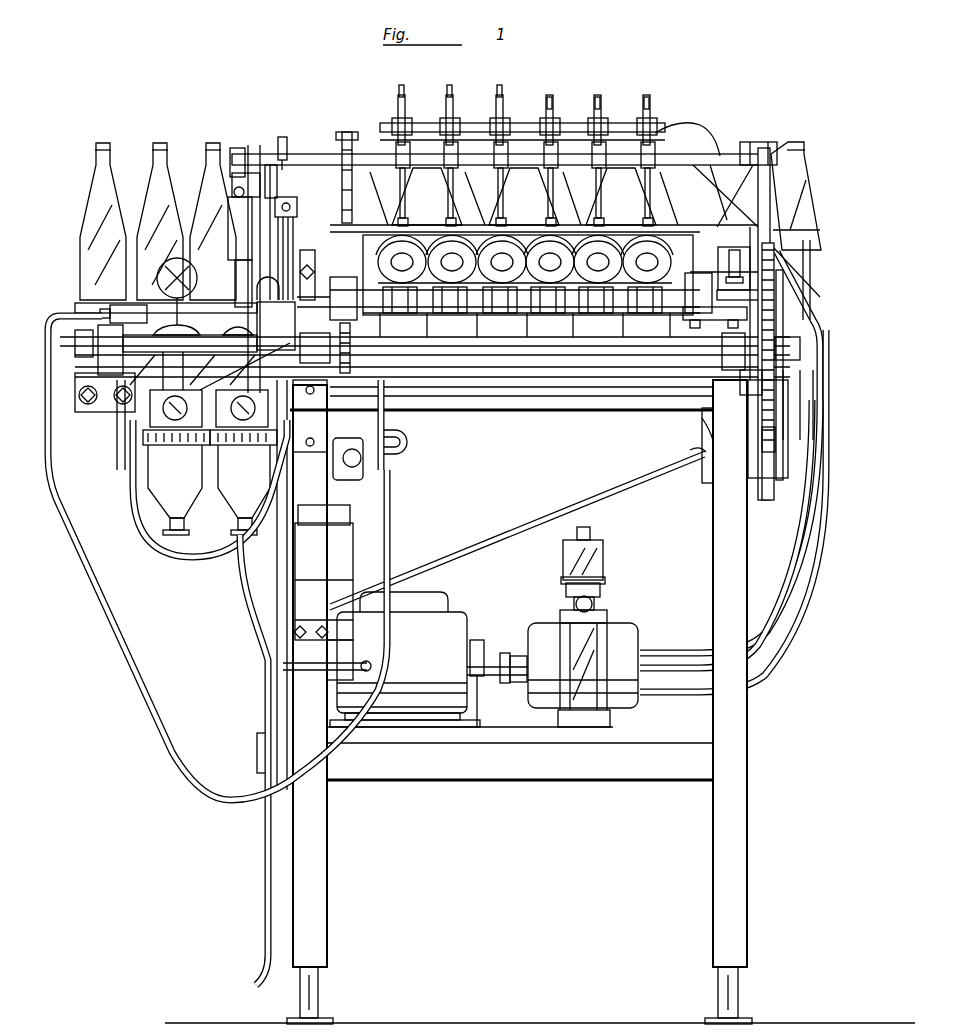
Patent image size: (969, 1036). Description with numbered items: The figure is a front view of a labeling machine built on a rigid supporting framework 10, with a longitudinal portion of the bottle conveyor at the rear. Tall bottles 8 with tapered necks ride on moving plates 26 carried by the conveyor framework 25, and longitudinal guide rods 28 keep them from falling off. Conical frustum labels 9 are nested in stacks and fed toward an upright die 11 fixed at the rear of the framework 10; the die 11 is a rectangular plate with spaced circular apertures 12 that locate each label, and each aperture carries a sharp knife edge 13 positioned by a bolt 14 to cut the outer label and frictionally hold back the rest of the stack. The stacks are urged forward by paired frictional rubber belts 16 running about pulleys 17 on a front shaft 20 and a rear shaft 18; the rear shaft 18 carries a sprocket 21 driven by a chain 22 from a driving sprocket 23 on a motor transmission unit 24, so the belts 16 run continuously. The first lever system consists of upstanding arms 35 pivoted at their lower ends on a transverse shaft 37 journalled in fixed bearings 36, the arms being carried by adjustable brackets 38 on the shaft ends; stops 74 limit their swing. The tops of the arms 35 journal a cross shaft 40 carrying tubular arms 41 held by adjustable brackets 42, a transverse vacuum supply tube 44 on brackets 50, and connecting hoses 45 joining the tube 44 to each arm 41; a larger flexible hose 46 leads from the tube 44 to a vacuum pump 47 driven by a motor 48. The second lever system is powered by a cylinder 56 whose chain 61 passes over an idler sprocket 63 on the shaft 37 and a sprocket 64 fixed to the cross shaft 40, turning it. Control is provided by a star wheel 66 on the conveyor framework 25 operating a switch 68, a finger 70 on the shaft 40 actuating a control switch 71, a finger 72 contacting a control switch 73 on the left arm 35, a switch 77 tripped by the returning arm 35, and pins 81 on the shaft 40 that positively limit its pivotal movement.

The bottle 8 is at (100, 276).
The label 9 is at (422, 262).
The supporting framework 10 is at (535, 412).
The upright die 11 is at (706, 228).
The aperture 12 is at (462, 240).
The knife edge 13 is at (398, 250).
The bolt 14 is at (397, 215).
The belt 16 is at (412, 315).
The pulley 17 is at (450, 315).
The rear shaft 18 is at (722, 286).
The front shaft 20 is at (670, 315).
The sprocket 21 is at (778, 285).
The driving chain 22 is at (790, 350).
The driving sprocket 23 is at (768, 455).
The motor transmission unit 24 is at (700, 433).
The conveyor framework 25 is at (82, 412).
The moving plate 26 is at (75, 352).
The guide rod 28 is at (208, 343).
The upstanding arm 35 is at (244, 233).
The fixed bearing 36 is at (352, 375).
The transverse shaft 37 is at (440, 368).
The adjustable bracket 38 is at (748, 385).
The cross shaft 40 is at (705, 158).
The tubular arm 41 is at (398, 190).
The adjustable bracket 42 is at (396, 148).
The vacuum supply tube 44 is at (526, 138).
The connecting hose 45 is at (402, 96).
The flexible hose 46 is at (812, 322).
The vacuum pump 47 is at (631, 652).
The motor 48 is at (426, 657).
The bracket 50 is at (435, 123).
The cylinder 56 is at (365, 465).
The chain 61 is at (346, 132).
The idler sprocket 63 is at (360, 370).
The sprocket 64 is at (336, 136).
The star wheel 66 is at (68, 312).
The switch 68 is at (123, 314).
The finger 70 is at (283, 137).
The control switch 71 is at (290, 207).
The finger 72 is at (238, 148).
The control switch 73 is at (231, 190).
The stop 74 is at (712, 418).
The switch 77 is at (275, 236).
The pin 81 is at (762, 146).